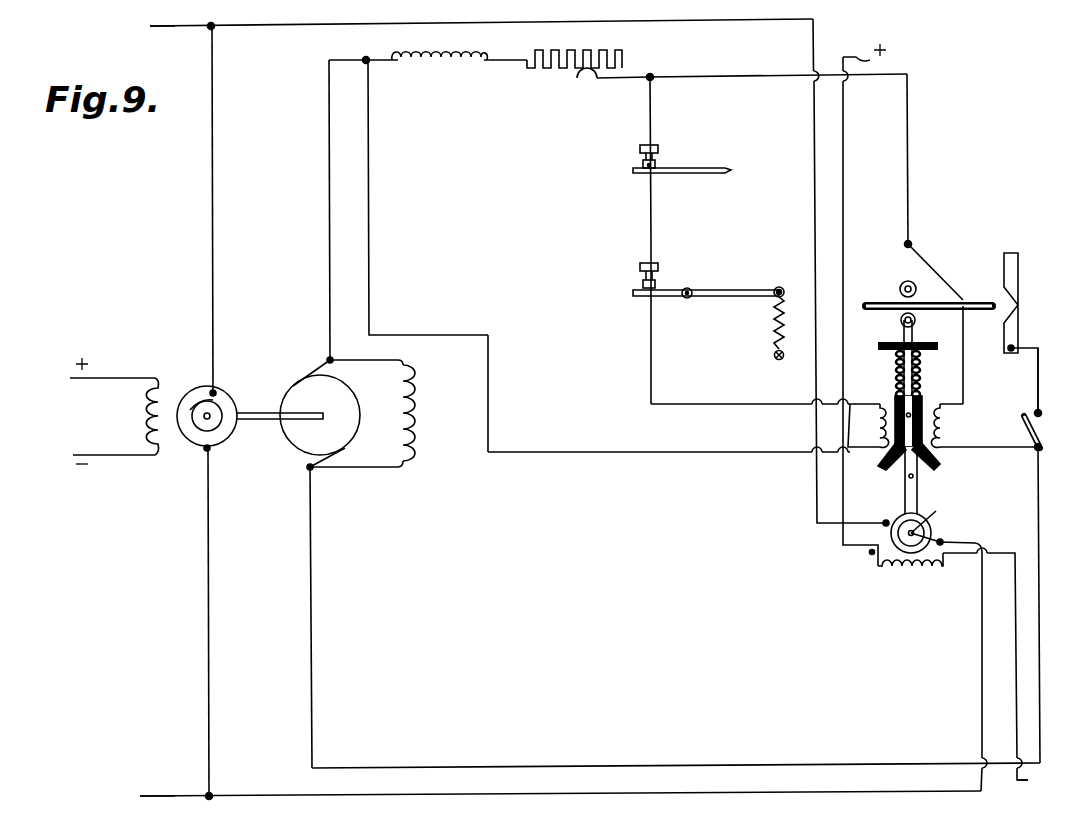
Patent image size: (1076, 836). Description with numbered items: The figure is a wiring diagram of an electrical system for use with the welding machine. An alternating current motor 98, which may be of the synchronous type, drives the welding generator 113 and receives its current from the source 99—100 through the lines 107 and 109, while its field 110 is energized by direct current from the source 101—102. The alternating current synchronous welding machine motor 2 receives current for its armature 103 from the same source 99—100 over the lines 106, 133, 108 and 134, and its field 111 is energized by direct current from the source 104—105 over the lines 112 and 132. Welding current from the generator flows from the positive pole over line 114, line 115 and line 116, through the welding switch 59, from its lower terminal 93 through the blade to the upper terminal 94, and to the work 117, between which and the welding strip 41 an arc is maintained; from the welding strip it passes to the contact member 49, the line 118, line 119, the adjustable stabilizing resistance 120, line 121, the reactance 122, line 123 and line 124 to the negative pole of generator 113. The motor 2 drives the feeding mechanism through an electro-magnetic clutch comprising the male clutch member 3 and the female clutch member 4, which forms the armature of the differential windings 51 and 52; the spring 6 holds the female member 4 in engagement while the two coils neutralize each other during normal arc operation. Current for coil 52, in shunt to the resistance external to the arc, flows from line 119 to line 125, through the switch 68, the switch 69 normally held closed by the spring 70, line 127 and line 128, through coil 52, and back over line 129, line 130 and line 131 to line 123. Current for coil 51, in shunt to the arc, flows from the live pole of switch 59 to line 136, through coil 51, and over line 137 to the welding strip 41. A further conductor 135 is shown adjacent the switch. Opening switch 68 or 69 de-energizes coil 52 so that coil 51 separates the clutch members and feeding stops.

The source 99 is at (171, 27).
The source 100 is at (176, 797).
The source 101 is at (86, 372).
The source 102 is at (86, 454).
The armature 103 is at (872, 554).
The source 104 is at (870, 60).
The source 105 is at (1045, 790).
The line 106 is at (533, 26).
The line 107 is at (214, 227).
The line 108 is at (650, 793).
The line 109 is at (210, 624).
The field 110 is at (160, 400).
The field 111 is at (920, 576).
The line 112 is at (1015, 672).
The welding generator 113 is at (300, 442).
The line 114 is at (313, 555).
The line 115 is at (655, 769).
The line 116 is at (1037, 519).
The work 117 is at (1016, 327).
The line 118 is at (910, 208).
The line 119 is at (749, 76).
The adjustable stabilizing resistance 120 is at (566, 72).
The line 121 is at (517, 63).
The reactance 122 is at (461, 63).
The line 123 is at (363, 59).
The line 124 is at (328, 167).
The line 125 is at (652, 105).
The line 127 is at (652, 341).
The line 128 is at (744, 402).
The line 129 is at (589, 455).
The line 130 is at (490, 393).
The line 131 is at (370, 208).
The line 132 is at (845, 214).
The line 133 is at (812, 156).
The line 134 is at (979, 647).
The conductor 135 is at (1036, 395).
The line 136 is at (962, 450).
The line 137 is at (965, 381).
The alternating current motor 98 is at (220, 407).
The switch 68 is at (660, 166).
The switch 69 is at (655, 290).
The spring 70 is at (773, 323).
The contact member 49 is at (937, 272).
The welding strip 41 is at (985, 298).
The spring 6 is at (921, 375).
The coil 52 is at (873, 424).
The coil 51 is at (946, 421).
The welding switch 59 is at (1026, 430).
The lower terminal 93 is at (1041, 449).
The upper terminal 94 is at (1040, 411).
The female clutch member 4 is at (936, 462).
The male clutch member 3 is at (932, 474).
The alternating current synchronous welding machine motor 2 is at (922, 527).